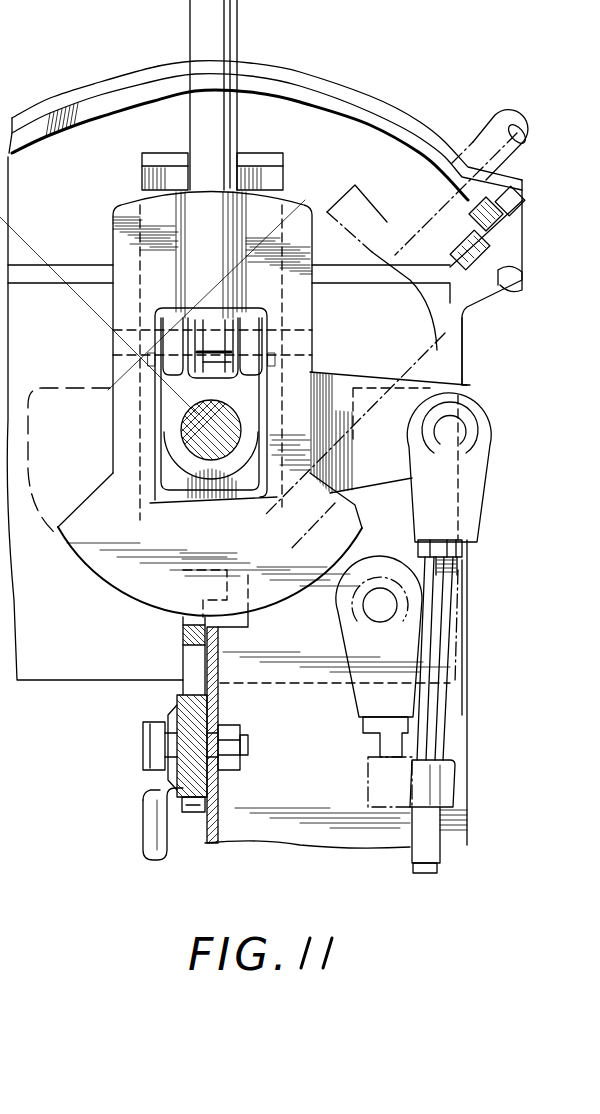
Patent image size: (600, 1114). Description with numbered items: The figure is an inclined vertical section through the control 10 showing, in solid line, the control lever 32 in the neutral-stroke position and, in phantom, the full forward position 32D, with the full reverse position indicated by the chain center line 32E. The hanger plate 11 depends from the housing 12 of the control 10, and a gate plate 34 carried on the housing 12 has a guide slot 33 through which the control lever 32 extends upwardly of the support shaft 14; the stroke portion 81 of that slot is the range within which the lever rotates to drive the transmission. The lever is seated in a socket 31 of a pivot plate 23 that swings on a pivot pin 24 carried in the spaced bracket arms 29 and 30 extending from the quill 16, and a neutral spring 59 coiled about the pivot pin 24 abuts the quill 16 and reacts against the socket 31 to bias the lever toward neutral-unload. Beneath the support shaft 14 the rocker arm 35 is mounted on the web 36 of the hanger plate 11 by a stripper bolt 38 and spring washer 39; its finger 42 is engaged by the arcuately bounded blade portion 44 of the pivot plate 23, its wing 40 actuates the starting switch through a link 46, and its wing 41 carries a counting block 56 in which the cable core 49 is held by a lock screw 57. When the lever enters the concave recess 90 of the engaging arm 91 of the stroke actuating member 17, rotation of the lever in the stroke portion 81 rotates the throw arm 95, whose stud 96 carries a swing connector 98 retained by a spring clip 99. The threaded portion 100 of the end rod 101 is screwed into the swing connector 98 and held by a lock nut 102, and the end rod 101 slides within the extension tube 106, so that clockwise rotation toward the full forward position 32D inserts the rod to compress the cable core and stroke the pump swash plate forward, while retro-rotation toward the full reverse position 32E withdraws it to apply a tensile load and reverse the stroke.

The control 10 is at (99, 70).
The hanger plate 11 is at (293, 862).
The housing 12 is at (395, 115).
The support shaft 14 is at (202, 457).
The quill 16 is at (172, 452).
The stroke actuating member 17 is at (345, 362).
The pivot plate 23 is at (104, 475).
The pivot pin 24 is at (212, 338).
The bracket arm 29 is at (250, 325).
The bracket arm 30 is at (168, 318).
The socket 31 is at (193, 212).
The control lever 32 is at (227, 25).
The full forward position 32D is at (483, 122).
The full reverse position 32E is at (30, 250).
The guide slot 33 is at (128, 102).
The gate plate 34 is at (480, 210).
The rocker arm 35 is at (222, 708).
The web 36 is at (218, 835).
The stripper bolt 38 is at (152, 747).
The spring washer 39 is at (170, 715).
The wing 40 is at (200, 805).
The wing 41 is at (7, 715).
The finger 42 is at (182, 623).
The blade portion 44 is at (125, 583).
The link 46 is at (145, 840).
The core 49 is at (13, 796).
The counting block 56 is at (11, 769).
The lock screw 57 is at (11, 742).
The neutral spring 59 is at (200, 366).
The stroke portion 81 is at (338, 107).
The concave recess 90 is at (230, 150).
The engaging arm 91 is at (275, 185).
The throw arm 95 is at (410, 380).
The stud 96 is at (460, 420).
The swing connector 98 is at (472, 490).
The spring clip 99 is at (478, 437).
The threaded portion 100 is at (445, 578).
The end rod 101 is at (435, 725).
The lock nut 102 is at (462, 556).
The extension tube 106 is at (440, 857).